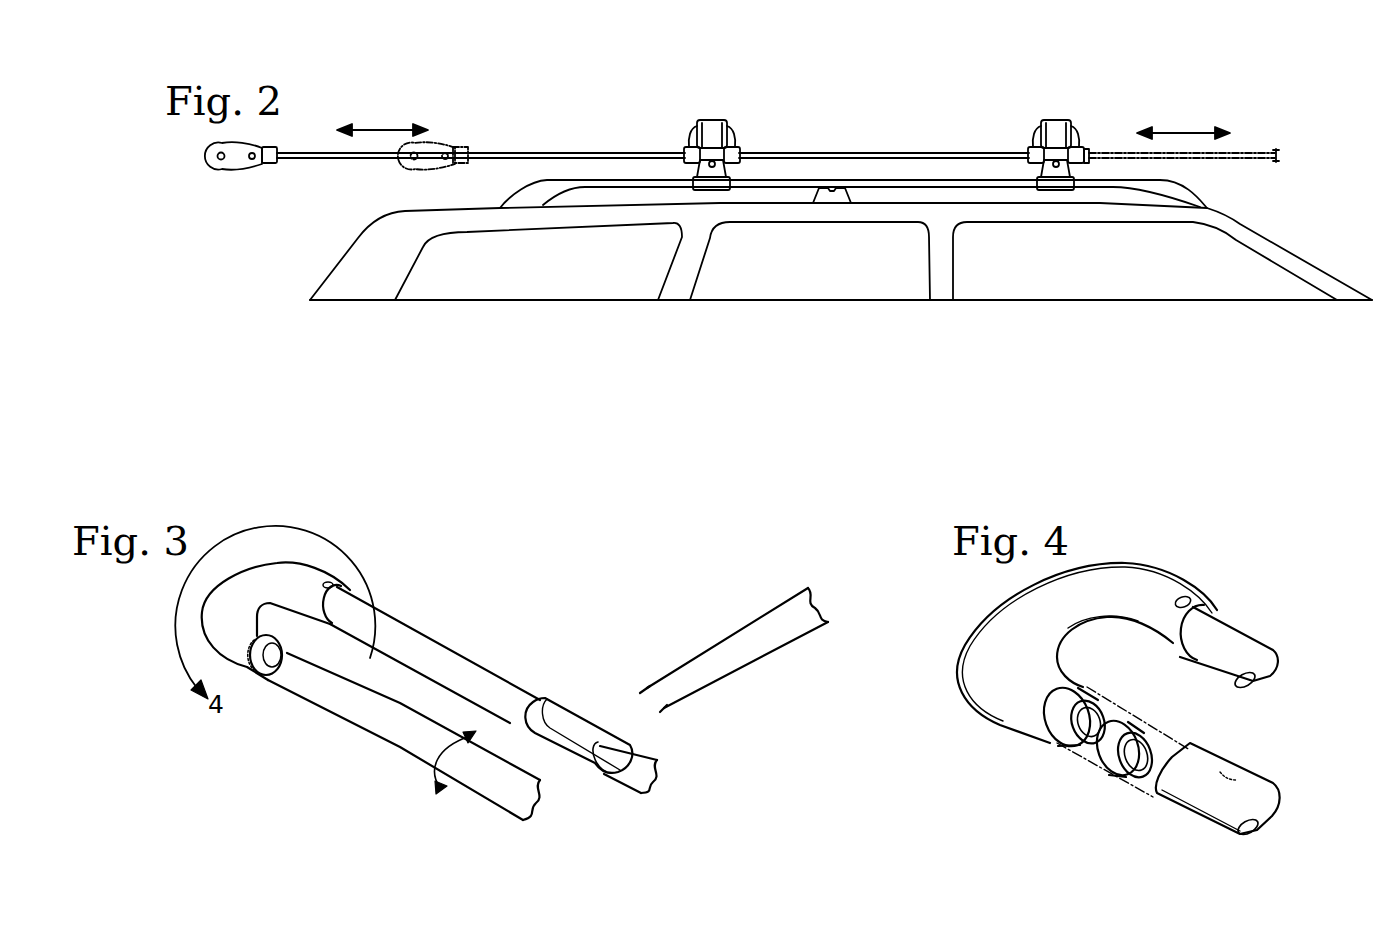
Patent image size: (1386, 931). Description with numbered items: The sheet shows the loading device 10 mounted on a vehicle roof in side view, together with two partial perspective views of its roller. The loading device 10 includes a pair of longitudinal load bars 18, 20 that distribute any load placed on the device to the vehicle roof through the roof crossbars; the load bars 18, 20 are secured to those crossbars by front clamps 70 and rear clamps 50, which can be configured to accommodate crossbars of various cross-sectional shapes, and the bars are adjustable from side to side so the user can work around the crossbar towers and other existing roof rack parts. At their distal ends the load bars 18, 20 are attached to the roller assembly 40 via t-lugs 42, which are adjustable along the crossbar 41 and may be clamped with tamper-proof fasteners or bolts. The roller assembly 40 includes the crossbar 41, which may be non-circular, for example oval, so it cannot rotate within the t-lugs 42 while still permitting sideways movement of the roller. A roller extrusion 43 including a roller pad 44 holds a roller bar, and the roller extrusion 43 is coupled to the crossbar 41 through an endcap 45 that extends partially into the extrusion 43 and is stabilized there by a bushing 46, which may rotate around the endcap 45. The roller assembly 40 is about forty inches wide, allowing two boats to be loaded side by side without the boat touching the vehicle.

In FIG. 2, the loading device 10 is at (951, 119).
In FIG. 3, the load bar 18 is at (722, 648).
In FIG. 2, the load bar 20 is at (830, 150).
In FIG. 3, the roller assembly 40 is at (451, 593).
In FIG. 4, the roller assembly 40 is at (1301, 610).
In FIG. 3, the crossbar 41 is at (437, 651).
In FIG. 4, the crossbar 41 is at (1230, 637).
In FIG. 2, the t-lug 42 is at (266, 147).
In FIG. 3, the t-lug 42 is at (577, 713).
In FIG. 4, the roller extrusion 43 is at (1223, 763).
In FIG. 3, the roller pad 44 is at (362, 717).
In FIG. 4, the roller pad 44 is at (1193, 793).
In FIG. 2, the endcap 45 is at (236, 166).
In FIG. 3, the endcap 45 is at (273, 578).
In FIG. 4, the endcap 45 is at (1015, 601).
In FIG. 4, the bushing 46 is at (1133, 725).
In FIG. 2, the rear clamp 50 is at (735, 148).
In FIG. 2, the front clamp 70 is at (1080, 148).